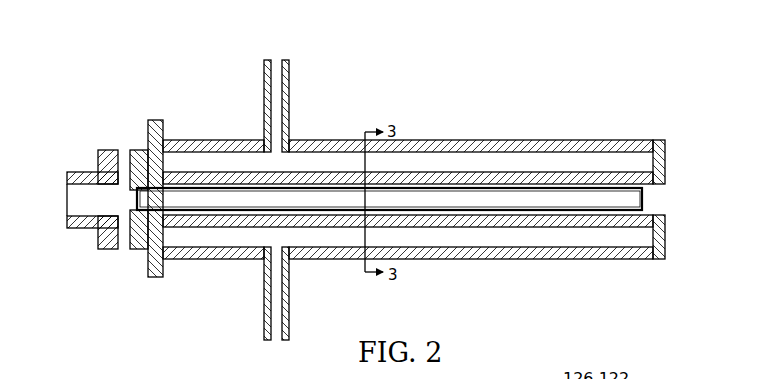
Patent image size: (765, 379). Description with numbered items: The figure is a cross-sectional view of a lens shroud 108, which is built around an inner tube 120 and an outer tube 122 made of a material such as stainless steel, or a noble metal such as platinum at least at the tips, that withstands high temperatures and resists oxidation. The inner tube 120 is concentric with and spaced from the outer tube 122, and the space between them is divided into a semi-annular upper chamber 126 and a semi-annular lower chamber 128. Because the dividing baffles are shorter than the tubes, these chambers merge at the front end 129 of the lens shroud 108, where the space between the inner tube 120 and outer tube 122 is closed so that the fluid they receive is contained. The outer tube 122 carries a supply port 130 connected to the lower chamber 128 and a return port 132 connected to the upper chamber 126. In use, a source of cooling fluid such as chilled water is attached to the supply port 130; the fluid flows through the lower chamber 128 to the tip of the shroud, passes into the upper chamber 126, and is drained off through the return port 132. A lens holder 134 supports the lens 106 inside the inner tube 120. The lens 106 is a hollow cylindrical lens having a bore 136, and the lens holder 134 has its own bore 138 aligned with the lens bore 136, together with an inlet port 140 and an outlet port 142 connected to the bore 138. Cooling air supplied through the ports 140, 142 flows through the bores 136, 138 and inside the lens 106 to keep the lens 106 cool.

The lens 106 is at (560, 188).
The lens shroud 108 is at (227, 85).
The inner tube 120 is at (458, 178).
The outer tube 122 is at (632, 140).
The semi-annular upper chamber 126 is at (507, 158).
The semi-annular lower chamber 128 is at (506, 242).
The front end of the lens shroud 129 is at (667, 153).
The supply port 130 is at (275, 328).
The return port 132 is at (273, 72).
The lens holder 134 is at (105, 148).
The lens bore 136 is at (227, 200).
The lens holder bore 138 is at (87, 197).
The inlet port 140 is at (122, 150).
The outlet port 142 is at (126, 240).